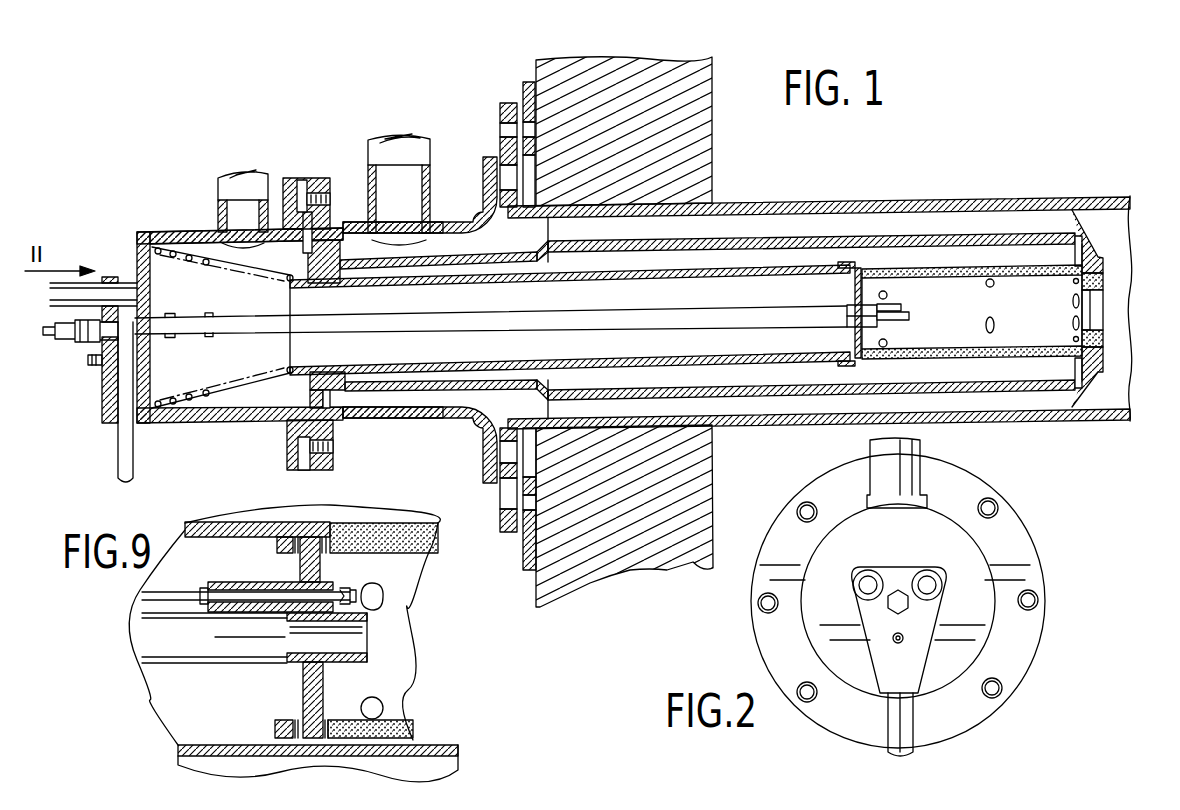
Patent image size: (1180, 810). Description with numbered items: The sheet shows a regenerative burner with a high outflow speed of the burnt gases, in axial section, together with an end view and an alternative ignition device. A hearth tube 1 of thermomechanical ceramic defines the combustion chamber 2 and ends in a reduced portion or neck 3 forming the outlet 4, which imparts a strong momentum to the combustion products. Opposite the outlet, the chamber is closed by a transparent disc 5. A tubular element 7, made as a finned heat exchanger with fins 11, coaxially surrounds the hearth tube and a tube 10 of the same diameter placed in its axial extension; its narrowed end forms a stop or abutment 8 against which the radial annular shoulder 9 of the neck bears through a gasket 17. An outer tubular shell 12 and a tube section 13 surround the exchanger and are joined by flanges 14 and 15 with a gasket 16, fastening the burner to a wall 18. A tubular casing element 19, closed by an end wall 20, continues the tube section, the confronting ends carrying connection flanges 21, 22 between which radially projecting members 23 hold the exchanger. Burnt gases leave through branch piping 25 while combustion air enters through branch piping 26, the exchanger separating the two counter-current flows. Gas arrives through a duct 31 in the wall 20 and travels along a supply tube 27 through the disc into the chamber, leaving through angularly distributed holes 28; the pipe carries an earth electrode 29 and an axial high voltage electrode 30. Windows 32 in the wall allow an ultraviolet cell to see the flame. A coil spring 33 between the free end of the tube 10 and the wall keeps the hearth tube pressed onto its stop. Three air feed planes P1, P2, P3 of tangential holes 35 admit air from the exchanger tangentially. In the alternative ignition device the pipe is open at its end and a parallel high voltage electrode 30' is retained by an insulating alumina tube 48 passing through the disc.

In FIG. 1, the hearth tube 1 is at (1040, 360).
In FIG. 9, the hearth tube 1 is at (430, 540).
In FIG. 1, the combustion chamber 2 is at (972, 312).
In FIG. 1, the reduced portion or neck 3 is at (1103, 282).
In FIG. 1, the outlet 4 is at (1098, 305).
In FIG. 1, the transparent disc 5 is at (850, 285).
In FIG. 9, the transparent disc 5 is at (303, 688).
In FIG. 1, the tubular element 7 is at (935, 235).
In FIG. 1, the axial positioning stop or abutment 8 is at (1096, 266).
In FIG. 1, the radial annular shoulder 9 is at (1101, 358).
In FIG. 1, the tube 10 is at (497, 277).
In FIG. 9, the tube 10 is at (193, 747).
In FIG. 1, the fins 11 is at (752, 228).
In FIG. 9, the fins 11 is at (333, 515).
In FIG. 1, the outer tubular shell 12 is at (792, 204).
In FIG. 1, the tube section 13 is at (455, 225).
In FIG. 1, the flange 14 is at (515, 100).
In FIG. 1, the flange 15 is at (500, 150).
In FIG. 1, the sealing joint, gasket or packing 16 is at (483, 200).
In FIG. 1, the sealing joint, gasket or packing 17 is at (1104, 345).
In FIG. 1, the wall 18 is at (628, 100).
In FIG. 1, the tubular casing element 19 is at (185, 231).
In FIG. 1, the wall 20 is at (142, 243).
In FIG. 2, the wall 20 is at (898, 600).
In FIG. 1, the connection flange 21 is at (316, 188).
In FIG. 1, the connection flange 22 is at (290, 188).
In FIG. 2, the connection flange 22 is at (780, 655).
In FIG. 1, the radially outwards projecting members 23 is at (305, 245).
In FIG. 1, the branch piping 25 is at (385, 150).
In FIG. 1, the branch piping 26 is at (222, 202).
In FIG. 2, the branch piping 26 is at (878, 460).
In FIG. 1, the supply tube 27 is at (388, 325).
In FIG. 9, the supply tube 27 is at (207, 655).
In FIG. 1, the holes or ports 28 is at (880, 320).
In FIG. 1, the earth electrode 29 is at (895, 304).
In FIG. 1, the high voltage electrode 30 is at (925, 323).
In FIG. 9, the high voltage electrode 30' is at (352, 580).
In FIG. 1, the duct 31 is at (110, 392).
In FIG. 2, the duct 31 is at (895, 712).
In FIG. 1, the windows 32 is at (132, 290).
In FIG. 2, the windows 32 is at (927, 578).
In FIG. 1, the coil spring 33 is at (240, 398).
In FIG. 9, the tangential holes 35 is at (383, 603).
In FIG. 9, the insulating alumina tube 48 is at (240, 583).
In FIG. 1, the air feed plane P1 is at (883, 290).
In FIG. 1, the air feed plane P2 is at (990, 278).
In FIG. 1, the air feed plane P3 is at (1079, 276).